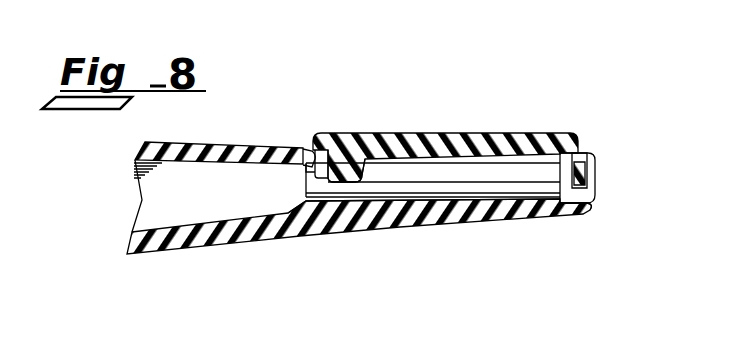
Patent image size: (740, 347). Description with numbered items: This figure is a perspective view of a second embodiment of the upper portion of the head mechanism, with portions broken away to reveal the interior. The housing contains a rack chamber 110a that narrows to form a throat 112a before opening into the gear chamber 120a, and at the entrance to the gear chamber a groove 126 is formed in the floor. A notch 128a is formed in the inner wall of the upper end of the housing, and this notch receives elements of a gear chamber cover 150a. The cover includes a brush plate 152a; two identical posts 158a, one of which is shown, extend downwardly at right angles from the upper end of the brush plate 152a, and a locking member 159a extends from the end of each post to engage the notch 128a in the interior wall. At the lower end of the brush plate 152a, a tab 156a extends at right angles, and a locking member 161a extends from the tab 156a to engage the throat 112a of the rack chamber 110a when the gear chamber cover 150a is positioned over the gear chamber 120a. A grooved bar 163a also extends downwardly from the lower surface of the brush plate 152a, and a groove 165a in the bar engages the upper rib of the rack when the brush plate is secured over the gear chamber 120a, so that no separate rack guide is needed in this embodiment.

The rack chamber 110a is at (223, 203).
The throat 112a is at (290, 200).
The groove 126 is at (415, 203).
The gear chamber 120a is at (487, 180).
The brush plate 152a is at (473, 135).
The groove 165a is at (416, 135).
The grooved bar 163a is at (347, 138).
The locking member 161a is at (305, 165).
The tab 156a is at (310, 150).
The gear chamber cover 150a is at (557, 135).
The locking member 159a is at (596, 185).
The post 158a is at (583, 174).
The notch 128a is at (597, 190).